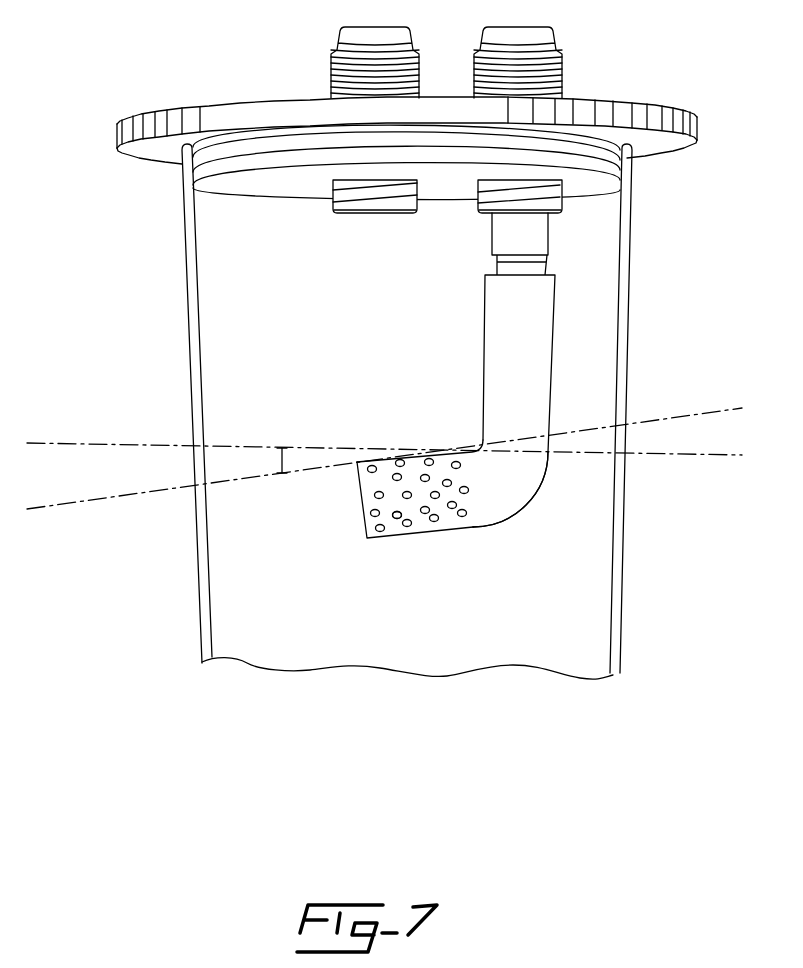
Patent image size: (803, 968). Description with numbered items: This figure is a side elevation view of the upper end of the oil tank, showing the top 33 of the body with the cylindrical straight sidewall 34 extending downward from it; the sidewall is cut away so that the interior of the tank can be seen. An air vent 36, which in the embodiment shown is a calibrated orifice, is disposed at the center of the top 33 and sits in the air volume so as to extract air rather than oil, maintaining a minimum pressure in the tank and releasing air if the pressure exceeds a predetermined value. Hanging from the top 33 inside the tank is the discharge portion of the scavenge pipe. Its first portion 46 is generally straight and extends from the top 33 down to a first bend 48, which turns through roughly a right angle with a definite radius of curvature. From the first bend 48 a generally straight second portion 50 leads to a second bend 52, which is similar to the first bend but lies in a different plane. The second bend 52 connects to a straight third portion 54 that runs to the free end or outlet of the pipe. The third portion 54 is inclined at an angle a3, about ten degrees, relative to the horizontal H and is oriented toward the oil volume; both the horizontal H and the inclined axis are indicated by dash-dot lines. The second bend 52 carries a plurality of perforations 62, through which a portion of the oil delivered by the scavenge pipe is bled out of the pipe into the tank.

The top 33 is at (187, 138).
The sidewall 34 is at (183, 297).
The air vent 36 is at (362, 190).
The first portion 46 is at (550, 333).
The first bend 48 is at (500, 498).
The second portion 50 is at (530, 477).
The second bend 52 is at (440, 503).
The third portion 54 is at (418, 523).
The perforations 62 is at (395, 520).
The horizontal H is at (384, 434).
The angle a3 is at (384, 458).